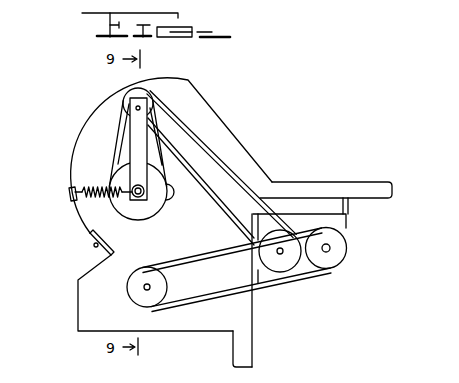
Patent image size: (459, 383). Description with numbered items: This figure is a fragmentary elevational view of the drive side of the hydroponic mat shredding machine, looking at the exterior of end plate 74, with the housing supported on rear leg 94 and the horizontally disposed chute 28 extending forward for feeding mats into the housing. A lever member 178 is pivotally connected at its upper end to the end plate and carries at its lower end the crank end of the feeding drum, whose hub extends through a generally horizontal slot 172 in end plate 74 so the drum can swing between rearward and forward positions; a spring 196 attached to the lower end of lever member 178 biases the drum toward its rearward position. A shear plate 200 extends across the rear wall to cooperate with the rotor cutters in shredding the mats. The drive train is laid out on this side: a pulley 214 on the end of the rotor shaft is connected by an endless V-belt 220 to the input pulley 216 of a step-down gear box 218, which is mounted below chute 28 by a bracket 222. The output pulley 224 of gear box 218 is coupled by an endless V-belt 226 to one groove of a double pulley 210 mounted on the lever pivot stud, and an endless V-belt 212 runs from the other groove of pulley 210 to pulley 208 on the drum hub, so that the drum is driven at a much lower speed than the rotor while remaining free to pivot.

The chute 28 is at (358, 185).
The end plate 74 is at (79, 312).
The rear leg 94 is at (255, 348).
The slot 172 is at (172, 190).
The lever member 178 is at (138, 152).
The spring 196 is at (98, 202).
The shear plate 200 is at (89, 238).
The pulley 208 is at (128, 221).
The double pulley 210 is at (130, 93).
The endless V-belt 212 is at (117, 119).
The pulley 214 is at (148, 303).
The input pulley 216 is at (338, 268).
The gear box 218 is at (347, 224).
The endless V-belt 220 is at (287, 278).
The bracket 222 is at (284, 213).
The output pulley 224 is at (263, 261).
The endless V-belt 226 is at (189, 129).